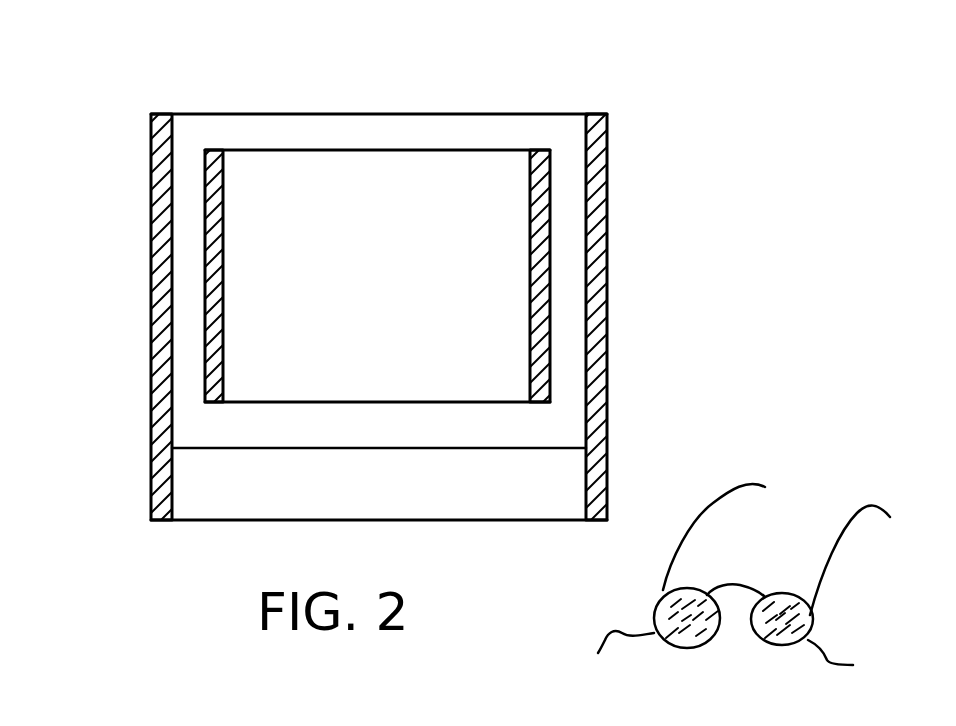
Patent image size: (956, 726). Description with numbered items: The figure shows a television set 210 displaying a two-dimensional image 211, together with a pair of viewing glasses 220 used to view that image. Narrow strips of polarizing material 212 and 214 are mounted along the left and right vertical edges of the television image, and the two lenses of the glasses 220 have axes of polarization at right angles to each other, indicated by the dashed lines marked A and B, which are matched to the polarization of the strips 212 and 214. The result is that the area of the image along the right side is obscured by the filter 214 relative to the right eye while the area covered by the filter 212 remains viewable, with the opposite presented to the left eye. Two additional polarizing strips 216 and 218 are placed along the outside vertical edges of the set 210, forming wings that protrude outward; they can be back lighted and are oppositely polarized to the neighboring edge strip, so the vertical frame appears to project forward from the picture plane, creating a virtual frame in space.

The television set 210 is at (339, 113).
The image 211 is at (387, 287).
The strip of polarizing material 212 is at (224, 226).
The strip of polarizing material 214 is at (530, 343).
The additional strip of polarizing material 216 is at (148, 172).
The additional strip of polarizing material 218 is at (610, 147).
The pair of viewing glasses 220 is at (723, 588).